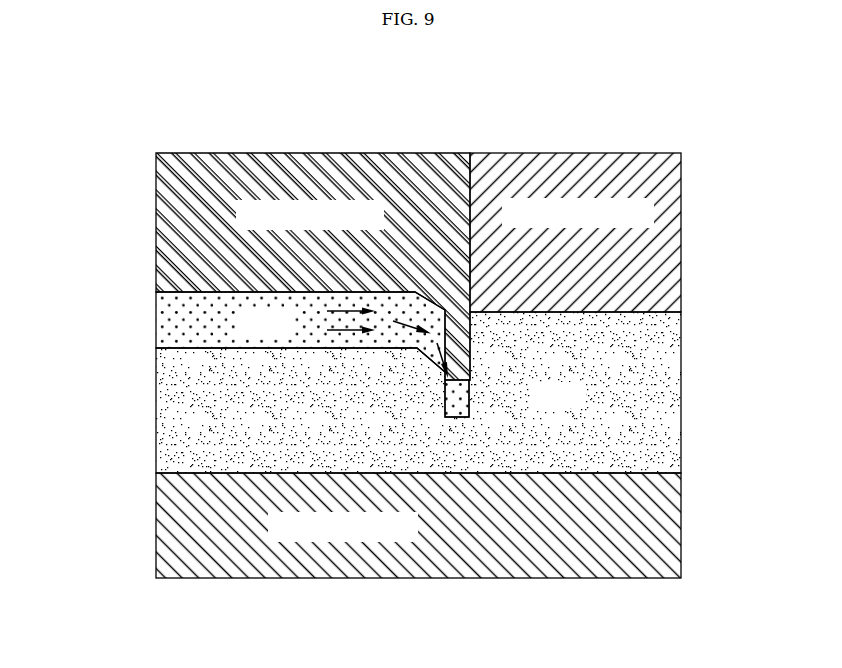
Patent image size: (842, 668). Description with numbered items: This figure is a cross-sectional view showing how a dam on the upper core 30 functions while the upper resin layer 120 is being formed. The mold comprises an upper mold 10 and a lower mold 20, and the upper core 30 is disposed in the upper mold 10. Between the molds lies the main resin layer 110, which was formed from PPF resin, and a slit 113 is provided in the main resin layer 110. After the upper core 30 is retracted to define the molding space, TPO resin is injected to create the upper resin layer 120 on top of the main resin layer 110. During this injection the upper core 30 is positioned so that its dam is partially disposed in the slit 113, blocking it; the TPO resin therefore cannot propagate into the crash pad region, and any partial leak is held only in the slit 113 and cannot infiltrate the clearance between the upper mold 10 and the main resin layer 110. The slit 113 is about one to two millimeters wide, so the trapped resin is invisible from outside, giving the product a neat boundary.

The upper core 30 is at (397, 175).
The upper mold 10 is at (660, 248).
The lower mold 20 is at (655, 533).
The upper resin layer 120 is at (180, 322).
The main resin layer 110 is at (655, 400).
The slit 113 is at (456, 410).